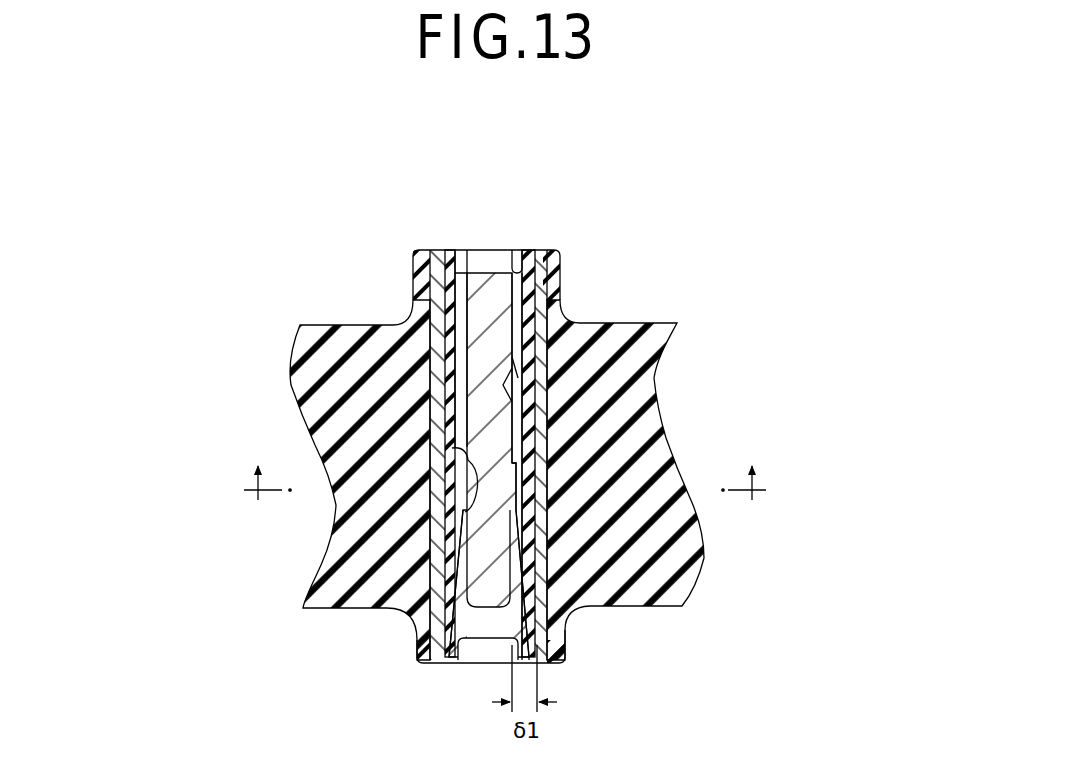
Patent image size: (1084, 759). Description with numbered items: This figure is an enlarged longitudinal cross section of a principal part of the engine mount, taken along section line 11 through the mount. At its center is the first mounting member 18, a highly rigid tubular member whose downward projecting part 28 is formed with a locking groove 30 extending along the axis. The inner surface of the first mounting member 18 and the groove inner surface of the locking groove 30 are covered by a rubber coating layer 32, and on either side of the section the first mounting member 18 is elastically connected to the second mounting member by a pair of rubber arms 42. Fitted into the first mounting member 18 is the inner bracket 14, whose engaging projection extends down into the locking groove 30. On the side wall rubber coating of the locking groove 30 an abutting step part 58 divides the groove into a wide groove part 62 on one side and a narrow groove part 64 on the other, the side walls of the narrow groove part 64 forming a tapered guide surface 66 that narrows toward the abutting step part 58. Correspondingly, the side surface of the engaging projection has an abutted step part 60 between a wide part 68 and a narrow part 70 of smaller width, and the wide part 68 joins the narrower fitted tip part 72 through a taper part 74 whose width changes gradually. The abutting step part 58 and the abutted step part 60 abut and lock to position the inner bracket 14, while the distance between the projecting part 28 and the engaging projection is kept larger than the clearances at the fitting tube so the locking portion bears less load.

The section line 11 is at (500, 513).
The inner bracket 14 is at (520, 350).
The first mounting member 18 is at (437, 276).
The projecting part 28 is at (490, 453).
The locking groove 30 is at (460, 343).
The rubber coating layer 32 is at (531, 577).
The rubber arm 42 is at (353, 357).
The abutting step part 58 is at (451, 452).
The abutted step part 60 is at (516, 466).
The wide groove part 62 is at (517, 270).
The narrow groove part 64 is at (486, 541).
The guide surface 66 is at (470, 643).
The wide part 68 is at (477, 428).
The narrow part 70 is at (470, 560).
The fitted tip part 72 is at (487, 272).
The taper part 74 is at (503, 386).